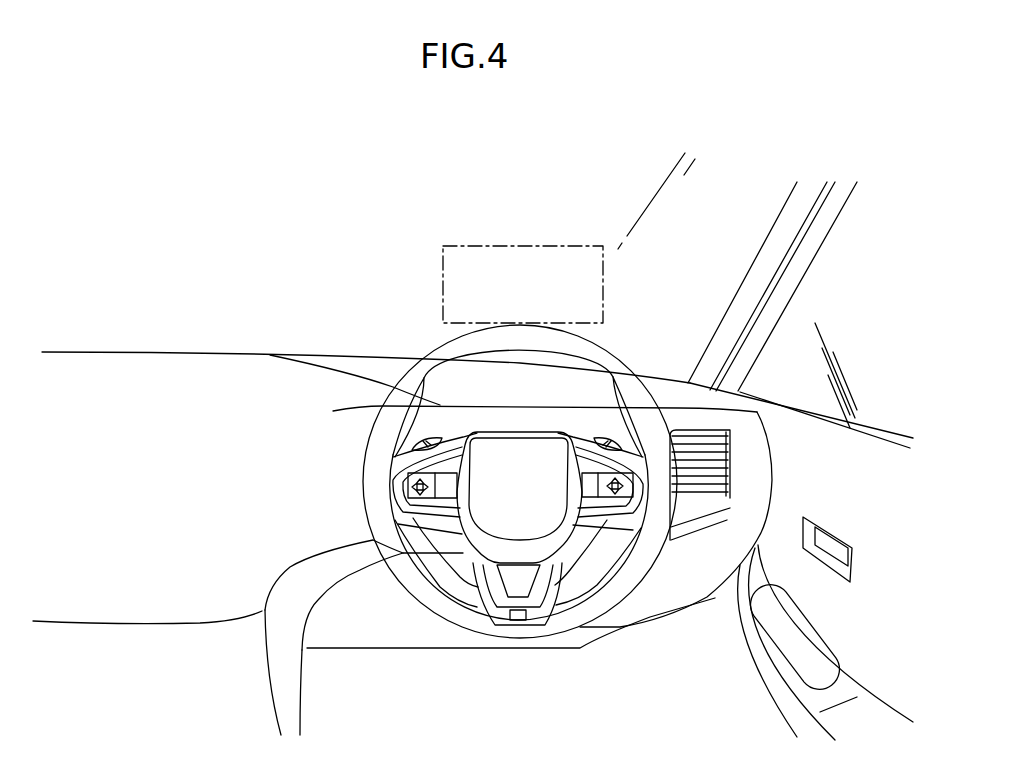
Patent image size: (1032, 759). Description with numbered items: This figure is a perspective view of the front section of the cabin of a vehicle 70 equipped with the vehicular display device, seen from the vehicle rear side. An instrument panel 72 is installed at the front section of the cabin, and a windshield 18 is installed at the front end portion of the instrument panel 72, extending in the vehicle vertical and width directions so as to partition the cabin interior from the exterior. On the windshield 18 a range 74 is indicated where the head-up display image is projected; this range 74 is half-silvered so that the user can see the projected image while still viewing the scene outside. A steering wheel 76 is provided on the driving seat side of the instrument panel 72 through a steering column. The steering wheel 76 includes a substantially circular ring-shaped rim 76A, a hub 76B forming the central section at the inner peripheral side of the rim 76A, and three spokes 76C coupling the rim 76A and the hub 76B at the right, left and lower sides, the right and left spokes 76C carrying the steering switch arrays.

The windshield 18 is at (722, 186).
The vehicle 70 is at (340, 196).
The instrument panel 72 is at (172, 369).
The range 74 is at (603, 262).
The steering wheel 76 is at (433, 347).
The rim 76A is at (618, 605).
The hub 76B is at (545, 432).
The spokes 76C is at (372, 545).